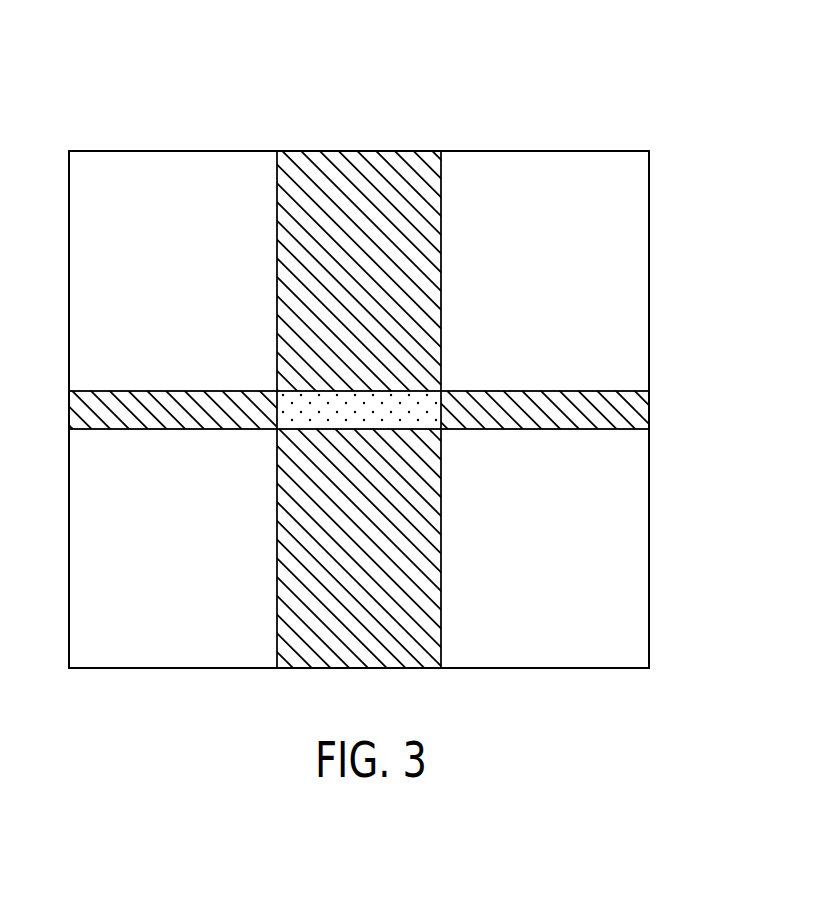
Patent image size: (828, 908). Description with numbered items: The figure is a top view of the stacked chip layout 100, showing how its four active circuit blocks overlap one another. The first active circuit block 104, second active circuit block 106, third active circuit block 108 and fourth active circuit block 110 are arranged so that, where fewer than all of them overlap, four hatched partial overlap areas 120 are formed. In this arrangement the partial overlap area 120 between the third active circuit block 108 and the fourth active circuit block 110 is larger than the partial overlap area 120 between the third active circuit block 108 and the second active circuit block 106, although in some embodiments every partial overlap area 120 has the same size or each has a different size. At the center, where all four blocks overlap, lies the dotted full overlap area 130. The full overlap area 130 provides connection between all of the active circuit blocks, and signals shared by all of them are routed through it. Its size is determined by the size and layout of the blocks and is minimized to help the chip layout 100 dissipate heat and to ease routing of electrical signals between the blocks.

The stacked chip layout 100 is at (99, 79).
The first active circuit block 104 is at (163, 288).
The second active circuit block 106 is at (530, 288).
The third active circuit block 108 is at (530, 558).
The fourth active circuit block 110 is at (163, 558).
The partial overlap area 120 is at (628, 413).
The full overlap area 130 is at (423, 405).